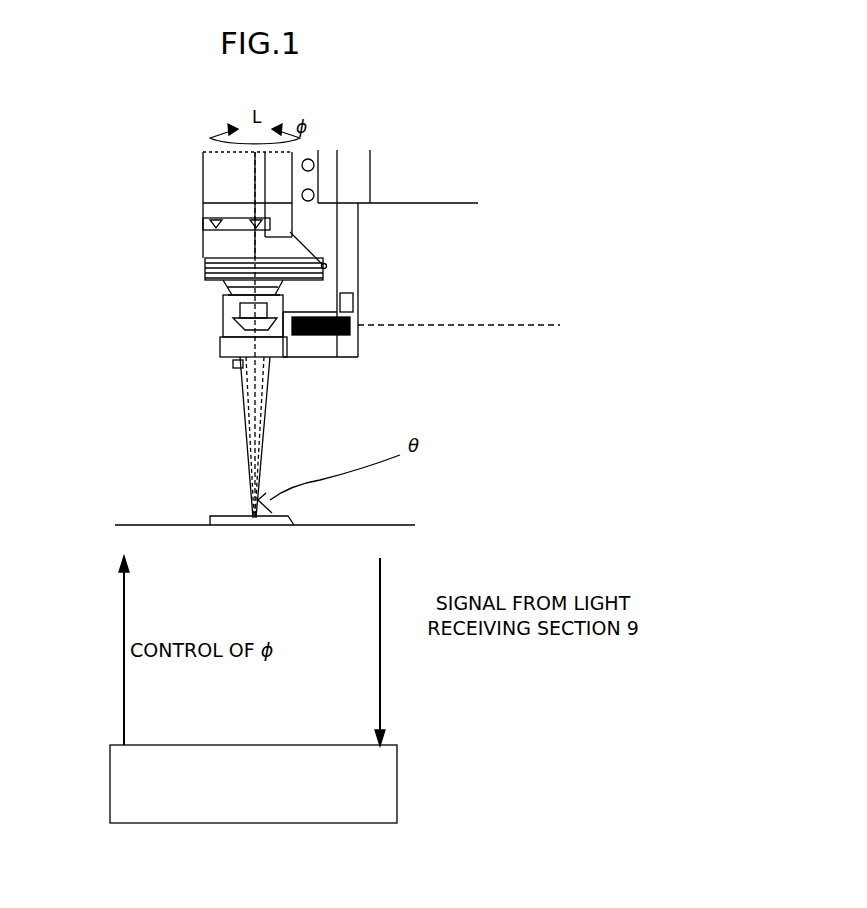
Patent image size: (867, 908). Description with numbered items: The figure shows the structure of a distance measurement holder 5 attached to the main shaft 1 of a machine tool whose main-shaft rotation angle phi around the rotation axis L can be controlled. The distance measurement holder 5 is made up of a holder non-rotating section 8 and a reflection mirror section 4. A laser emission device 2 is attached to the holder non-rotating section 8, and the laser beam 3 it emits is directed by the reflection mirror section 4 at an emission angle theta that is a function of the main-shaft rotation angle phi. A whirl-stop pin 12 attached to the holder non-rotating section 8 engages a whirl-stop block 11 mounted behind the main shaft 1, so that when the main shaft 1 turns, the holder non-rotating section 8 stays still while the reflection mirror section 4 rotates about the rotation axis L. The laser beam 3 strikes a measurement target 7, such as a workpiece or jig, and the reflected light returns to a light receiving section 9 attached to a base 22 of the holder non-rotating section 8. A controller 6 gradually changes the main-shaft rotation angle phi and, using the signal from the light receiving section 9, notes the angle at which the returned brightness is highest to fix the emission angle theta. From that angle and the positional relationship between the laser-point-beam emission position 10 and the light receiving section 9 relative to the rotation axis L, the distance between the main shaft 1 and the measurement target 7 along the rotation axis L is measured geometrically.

The main shaft 1 is at (202, 205).
The laser emission device 2 is at (360, 315).
The laser beam 3 is at (248, 440).
The reflection mirror section 4 is at (222, 318).
The distance measurement holder 5 is at (157, 376).
The controller 6 is at (400, 795).
The measurement target 7 is at (286, 517).
The holder non-rotating section 8 is at (222, 322).
The light receiving section 9 is at (232, 364).
The laser-point-beam emission position 10 is at (285, 358).
The whirl-stop block 11 is at (360, 237).
The whirl-stop pin 12 is at (358, 292).
The base 22 is at (220, 345).